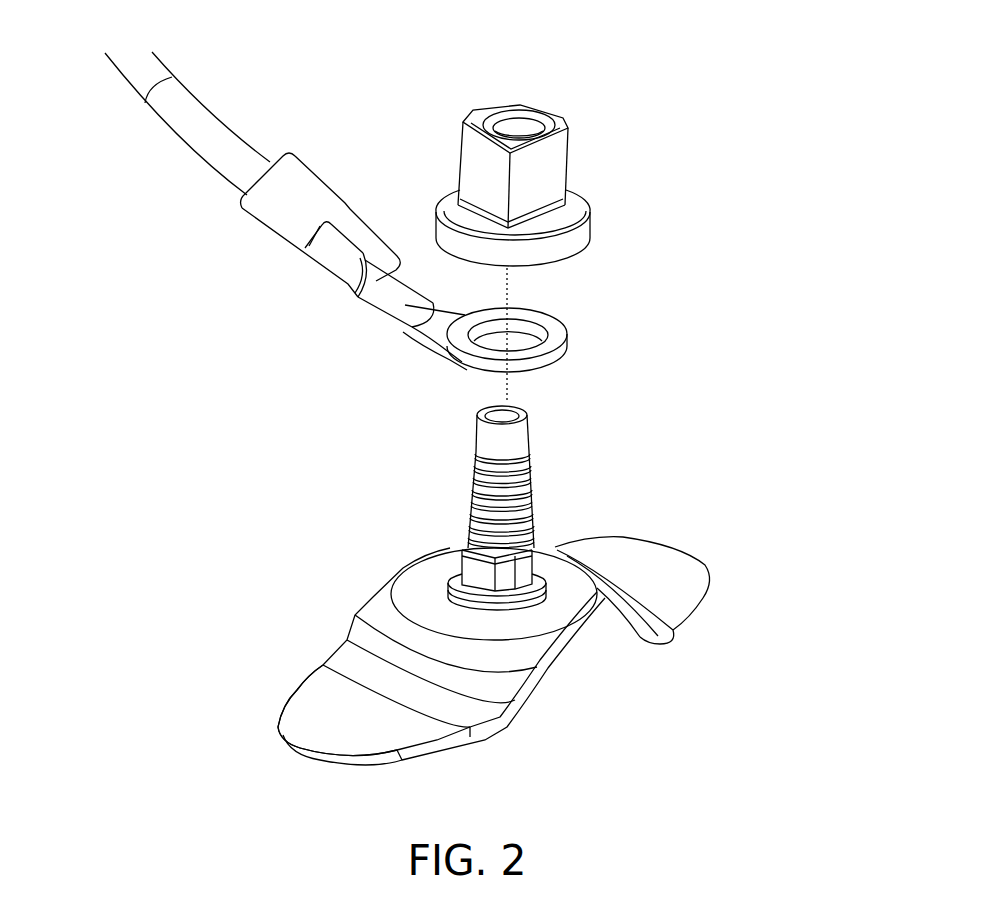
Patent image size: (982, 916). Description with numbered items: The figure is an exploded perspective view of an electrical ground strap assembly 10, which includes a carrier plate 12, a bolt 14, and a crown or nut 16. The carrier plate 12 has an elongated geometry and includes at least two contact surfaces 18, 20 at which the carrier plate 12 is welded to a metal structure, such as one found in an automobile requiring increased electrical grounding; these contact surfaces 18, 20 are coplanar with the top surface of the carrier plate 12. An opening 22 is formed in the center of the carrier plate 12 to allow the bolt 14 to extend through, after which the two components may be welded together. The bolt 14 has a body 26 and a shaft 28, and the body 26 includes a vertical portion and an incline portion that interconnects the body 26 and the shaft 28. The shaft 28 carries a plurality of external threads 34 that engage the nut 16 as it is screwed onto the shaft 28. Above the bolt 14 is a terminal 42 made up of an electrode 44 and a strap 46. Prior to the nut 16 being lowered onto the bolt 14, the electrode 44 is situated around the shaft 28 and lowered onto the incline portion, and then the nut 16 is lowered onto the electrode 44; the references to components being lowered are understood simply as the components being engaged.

The electrical ground strap assembly 10 is at (327, 445).
The carrier plate 12 is at (703, 597).
The bolt 14 is at (527, 422).
The nut 16 is at (572, 123).
The contact surface 18 is at (295, 718).
The contact surface 20 is at (665, 570).
The opening 22 is at (447, 583).
The body 26 is at (550, 547).
The shaft 28 is at (535, 475).
The external threads 34 is at (468, 475).
The terminal 42 is at (352, 146).
The electrode 44 is at (557, 322).
The strap 46 is at (207, 107).